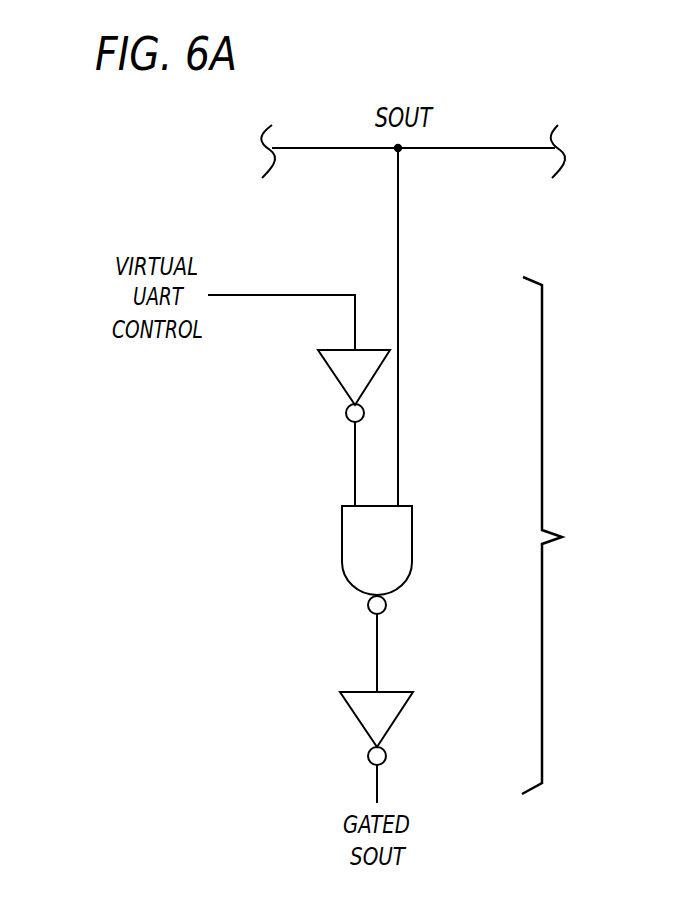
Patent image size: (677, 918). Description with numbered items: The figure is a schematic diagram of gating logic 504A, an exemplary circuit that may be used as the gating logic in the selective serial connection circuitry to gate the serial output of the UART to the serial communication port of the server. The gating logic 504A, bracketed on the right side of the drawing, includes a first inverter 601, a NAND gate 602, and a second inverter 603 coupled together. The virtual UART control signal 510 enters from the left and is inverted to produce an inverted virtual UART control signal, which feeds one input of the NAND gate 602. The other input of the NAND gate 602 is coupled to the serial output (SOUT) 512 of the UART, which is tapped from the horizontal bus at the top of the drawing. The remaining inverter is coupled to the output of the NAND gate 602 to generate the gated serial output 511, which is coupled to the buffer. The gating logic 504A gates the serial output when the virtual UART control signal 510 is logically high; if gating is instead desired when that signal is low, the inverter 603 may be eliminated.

The virtual UART control signal 510 is at (282, 295).
The serial output (SOUT) 512 is at (398, 238).
The second inverter 603 is at (333, 378).
The NAND gate 602 is at (410, 547).
The first inverter 601 is at (397, 717).
The gated serial output 511 is at (378, 782).
The gating logic 504A is at (570, 535).